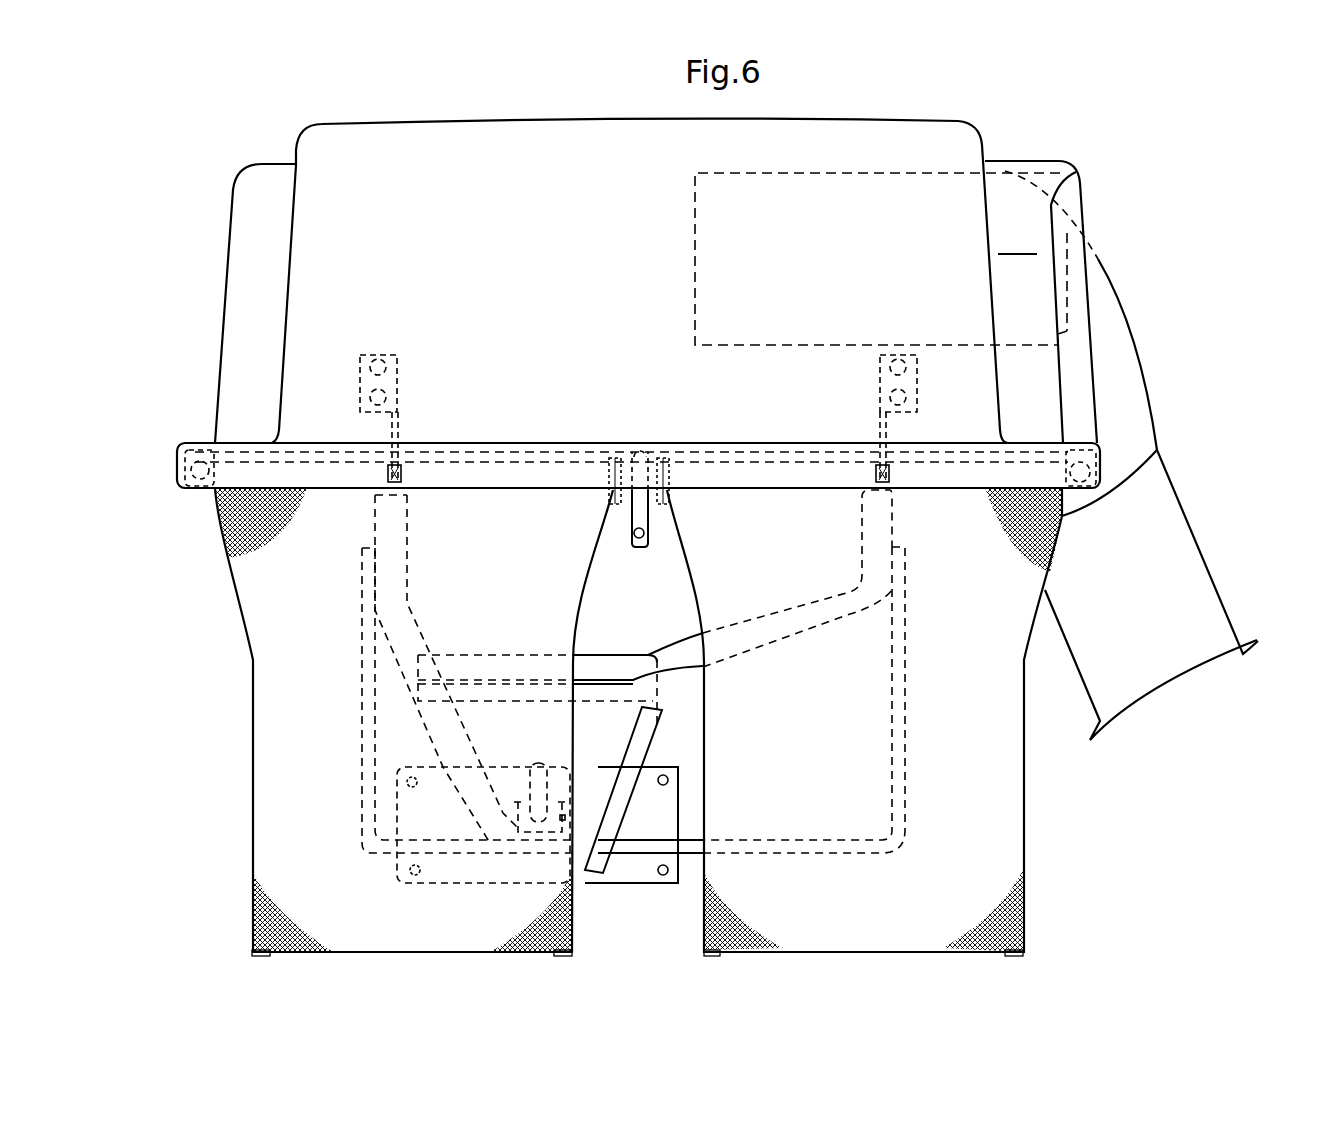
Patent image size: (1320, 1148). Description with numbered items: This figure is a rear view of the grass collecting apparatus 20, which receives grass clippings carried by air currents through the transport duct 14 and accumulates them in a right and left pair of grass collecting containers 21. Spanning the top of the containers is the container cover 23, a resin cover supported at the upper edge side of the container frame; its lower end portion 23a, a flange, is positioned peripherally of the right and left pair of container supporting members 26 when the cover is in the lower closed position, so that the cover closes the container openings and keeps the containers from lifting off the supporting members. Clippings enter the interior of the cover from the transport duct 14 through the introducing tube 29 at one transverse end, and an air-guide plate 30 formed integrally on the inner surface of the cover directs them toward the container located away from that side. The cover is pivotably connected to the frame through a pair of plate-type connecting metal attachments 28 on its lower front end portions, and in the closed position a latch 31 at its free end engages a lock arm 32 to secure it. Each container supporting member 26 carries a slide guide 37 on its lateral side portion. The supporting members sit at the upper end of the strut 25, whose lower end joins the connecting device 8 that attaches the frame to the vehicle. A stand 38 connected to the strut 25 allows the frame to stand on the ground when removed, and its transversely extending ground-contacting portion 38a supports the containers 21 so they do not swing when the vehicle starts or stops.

The grass collecting apparatus 20 is at (205, 192).
The container cover 23 is at (245, 327).
The lower end portion 23a is at (777, 480).
The introducing tube 29 is at (1119, 326).
The air-guide plate 30 is at (953, 172).
The transport duct 14 is at (1205, 619).
The grass collecting container 21 is at (268, 828).
The container supporting member 26 is at (566, 468).
The slide guide 37 is at (177, 461).
The connecting metal attachment 28 is at (408, 428).
The latch 31 is at (648, 520).
The lock arm 32 is at (632, 535).
The strut 25 is at (780, 640).
The stand 38 is at (907, 710).
The ground-contacting portion 38a is at (623, 847).
The connecting device 8 is at (623, 793).